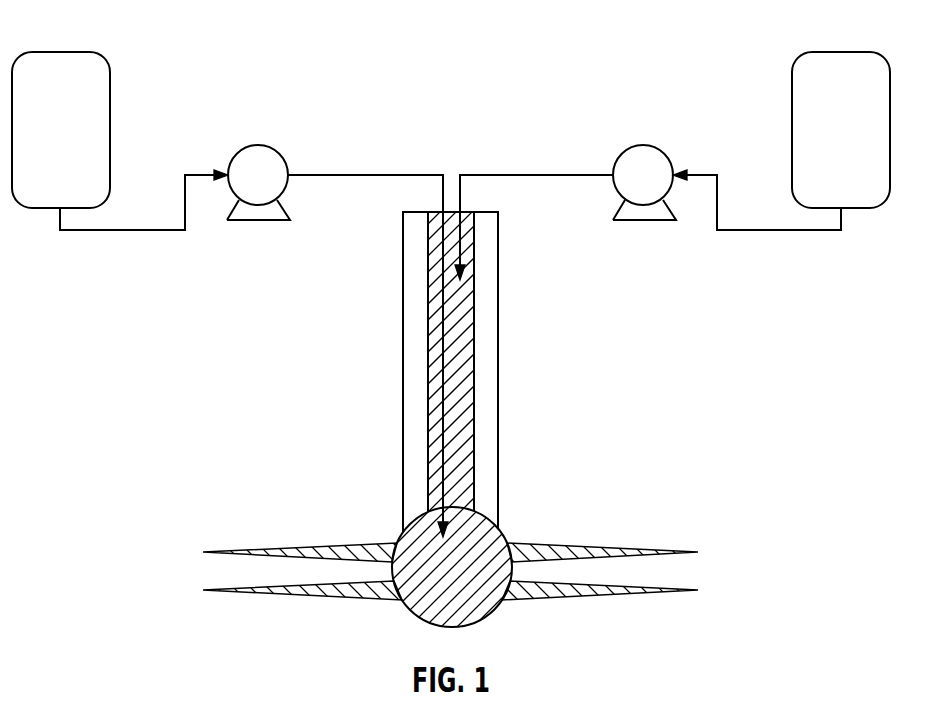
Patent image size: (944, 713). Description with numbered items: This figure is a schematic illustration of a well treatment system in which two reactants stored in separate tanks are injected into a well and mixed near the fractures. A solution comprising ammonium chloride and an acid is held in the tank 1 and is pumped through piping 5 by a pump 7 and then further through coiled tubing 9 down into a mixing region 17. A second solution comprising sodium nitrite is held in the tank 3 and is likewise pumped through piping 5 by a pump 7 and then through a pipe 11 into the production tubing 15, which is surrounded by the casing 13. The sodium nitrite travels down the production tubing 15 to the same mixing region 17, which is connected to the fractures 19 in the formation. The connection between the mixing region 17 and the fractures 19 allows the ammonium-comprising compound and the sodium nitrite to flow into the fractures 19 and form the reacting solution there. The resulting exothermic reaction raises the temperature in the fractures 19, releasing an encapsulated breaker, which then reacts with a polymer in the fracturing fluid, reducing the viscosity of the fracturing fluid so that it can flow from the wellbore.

The tank 1 is at (60, 72).
The tank 3 is at (840, 72).
The piping 5 is at (123, 233).
The pump 7 is at (258, 144).
The coiled tubing 9 is at (383, 174).
The pipe 11 is at (518, 174).
The casing 13 is at (410, 357).
The production tubing 15 is at (463, 372).
The mixing region 17 is at (412, 540).
The fractures 19 is at (618, 548).